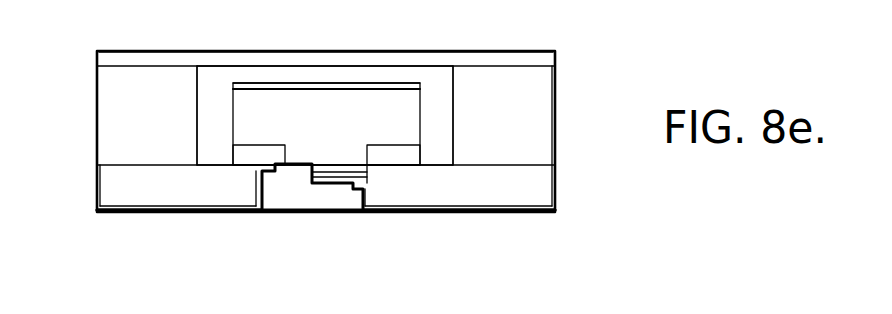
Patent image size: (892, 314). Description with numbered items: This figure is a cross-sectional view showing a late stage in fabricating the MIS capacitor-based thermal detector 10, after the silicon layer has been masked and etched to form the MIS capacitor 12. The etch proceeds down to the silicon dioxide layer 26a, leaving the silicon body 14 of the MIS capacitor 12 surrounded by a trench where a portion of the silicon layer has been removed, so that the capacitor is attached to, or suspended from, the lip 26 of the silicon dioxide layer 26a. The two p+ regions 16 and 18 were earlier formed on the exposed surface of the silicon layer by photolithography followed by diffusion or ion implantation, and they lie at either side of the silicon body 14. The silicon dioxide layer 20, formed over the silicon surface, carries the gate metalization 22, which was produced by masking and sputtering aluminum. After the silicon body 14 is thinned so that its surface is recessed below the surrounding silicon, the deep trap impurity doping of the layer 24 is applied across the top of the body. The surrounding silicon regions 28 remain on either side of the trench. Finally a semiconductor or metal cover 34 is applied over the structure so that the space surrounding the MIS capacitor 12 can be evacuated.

The detector device 10 is at (584, 73).
The MIS capacitor 12 is at (217, 144).
The silicon body 14 is at (315, 128).
The p+ region 16 is at (394, 145).
The p+ region 18 is at (247, 145).
The silicon dioxide layer 20 is at (310, 170).
The gate metalization 22 is at (330, 178).
The layer 24 is at (336, 84).
The lip 26 is at (240, 164).
The silicon dioxide layer 26a is at (97, 184).
The side regions 28 is at (96, 104).
The cover 34 is at (527, 51).